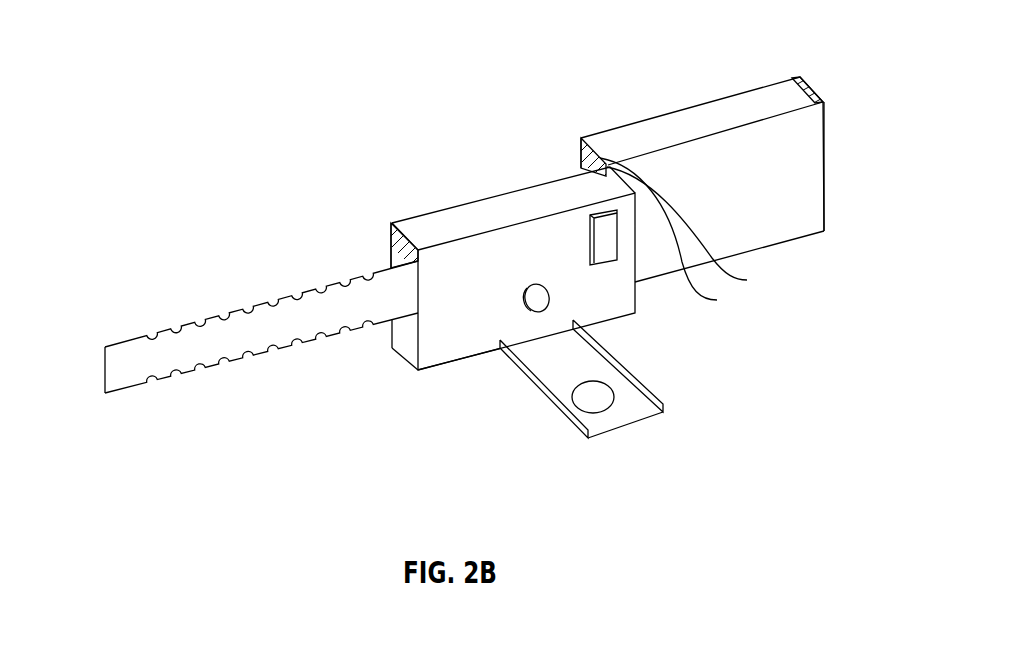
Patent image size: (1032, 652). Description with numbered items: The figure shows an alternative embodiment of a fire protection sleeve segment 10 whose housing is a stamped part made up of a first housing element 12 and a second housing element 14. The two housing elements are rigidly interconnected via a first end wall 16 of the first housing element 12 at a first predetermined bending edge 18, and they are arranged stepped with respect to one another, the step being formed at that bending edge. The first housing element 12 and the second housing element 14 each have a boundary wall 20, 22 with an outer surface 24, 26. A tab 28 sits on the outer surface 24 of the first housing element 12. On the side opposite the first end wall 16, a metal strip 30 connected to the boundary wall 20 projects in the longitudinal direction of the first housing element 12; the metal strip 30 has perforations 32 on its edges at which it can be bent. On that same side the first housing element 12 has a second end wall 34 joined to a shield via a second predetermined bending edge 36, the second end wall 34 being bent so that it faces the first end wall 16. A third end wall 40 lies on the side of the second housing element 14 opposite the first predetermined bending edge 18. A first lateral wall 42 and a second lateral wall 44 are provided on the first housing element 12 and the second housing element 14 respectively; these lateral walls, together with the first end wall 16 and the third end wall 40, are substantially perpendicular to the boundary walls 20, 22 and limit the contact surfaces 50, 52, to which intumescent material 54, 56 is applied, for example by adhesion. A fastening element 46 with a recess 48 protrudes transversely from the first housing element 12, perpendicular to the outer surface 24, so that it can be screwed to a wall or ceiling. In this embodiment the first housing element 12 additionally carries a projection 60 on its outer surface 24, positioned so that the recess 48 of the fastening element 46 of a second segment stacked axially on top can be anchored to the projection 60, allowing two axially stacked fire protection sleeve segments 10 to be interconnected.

The fire protection sleeve segment 10 is at (216, 160).
The first housing element 12 is at (493, 249).
The second housing element 14 is at (707, 170).
The first end wall 16 is at (674, 237).
The first predetermined bending edge 18 is at (694, 231).
The boundary wall 20 is at (463, 343).
The boundary wall 22 is at (805, 233).
The outer surface 24 is at (433, 357).
The outer surface 26 is at (812, 193).
The tab 28 is at (600, 247).
The metal strip 30 is at (261, 356).
The perforations 32 is at (202, 322).
The second end wall 34 is at (395, 349).
The second predetermined bending edge 36 is at (390, 337).
The third end wall 40 is at (813, 92).
The first lateral wall 42 is at (445, 222).
The second lateral wall 44 is at (683, 120).
The fastening element 46 is at (587, 401).
The recess 48 is at (598, 398).
The contact surface 50 is at (389, 252).
The contact surface 52 is at (581, 156).
The intumescent material 54 is at (389, 232).
The intumescent material 56 is at (581, 138).
The projection 60 is at (541, 306).